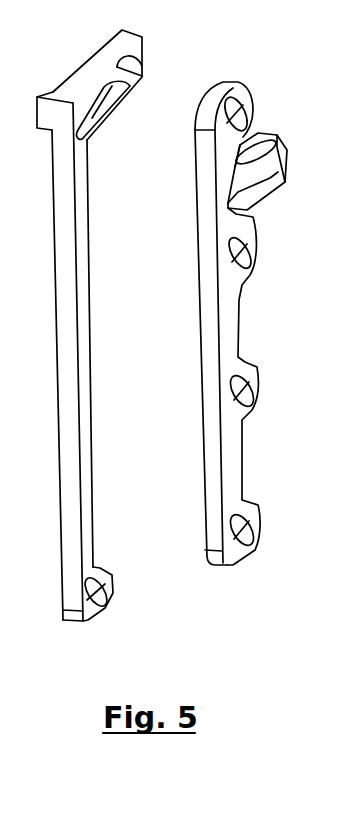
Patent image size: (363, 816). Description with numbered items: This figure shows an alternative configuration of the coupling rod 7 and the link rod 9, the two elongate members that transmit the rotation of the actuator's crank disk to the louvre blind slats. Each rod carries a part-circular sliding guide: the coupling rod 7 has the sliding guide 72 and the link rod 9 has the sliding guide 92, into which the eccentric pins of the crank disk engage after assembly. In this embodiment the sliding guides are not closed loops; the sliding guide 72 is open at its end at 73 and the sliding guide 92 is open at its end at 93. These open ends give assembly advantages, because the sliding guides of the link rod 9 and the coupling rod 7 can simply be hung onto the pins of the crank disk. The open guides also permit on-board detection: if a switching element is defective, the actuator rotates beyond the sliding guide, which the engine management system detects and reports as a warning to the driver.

The coupling rod 7 is at (212, 318).
The link rod 9 is at (67, 410).
The sliding guide 72 is at (268, 176).
The open end of sliding guide 73 is at (287, 132).
The sliding guide 92 is at (105, 90).
The open end of sliding guide 93 is at (137, 88).